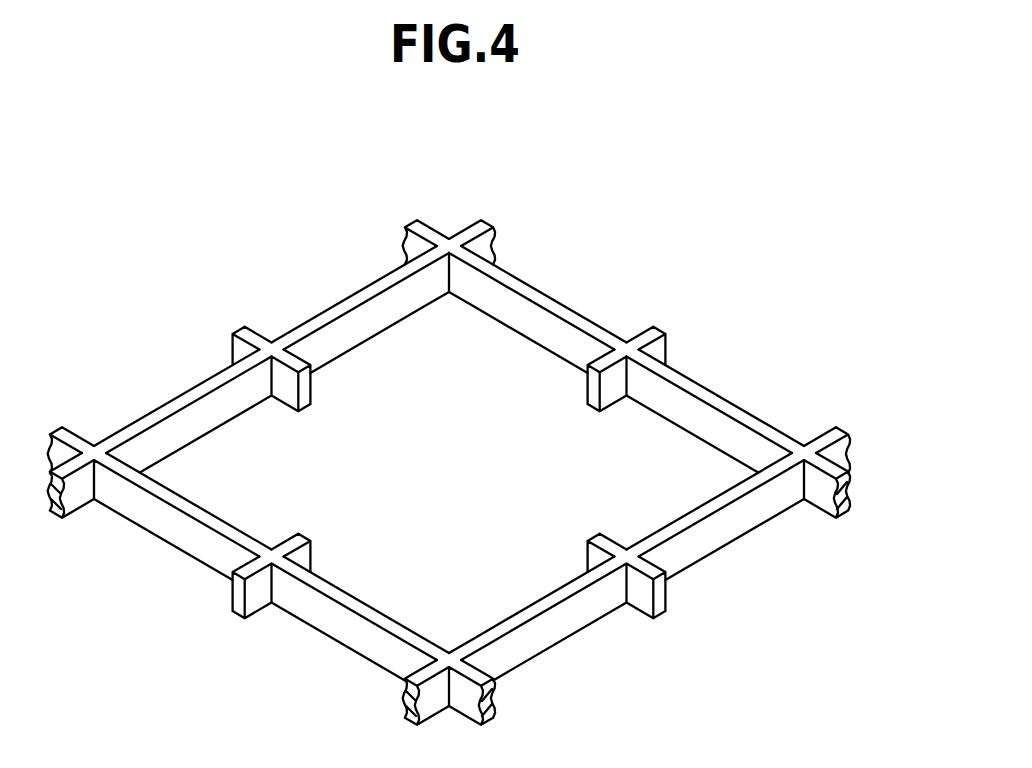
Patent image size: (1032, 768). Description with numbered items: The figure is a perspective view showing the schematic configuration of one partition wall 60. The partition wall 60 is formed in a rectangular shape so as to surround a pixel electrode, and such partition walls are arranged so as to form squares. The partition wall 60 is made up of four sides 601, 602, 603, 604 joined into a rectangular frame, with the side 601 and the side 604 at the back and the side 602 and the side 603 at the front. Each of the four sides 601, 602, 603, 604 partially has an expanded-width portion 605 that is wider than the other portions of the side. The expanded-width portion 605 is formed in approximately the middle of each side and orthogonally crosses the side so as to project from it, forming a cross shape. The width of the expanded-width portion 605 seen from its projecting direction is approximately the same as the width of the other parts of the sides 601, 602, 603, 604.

The partition wall 60 is at (344, 248).
The side 601 is at (529, 284).
The side 602 is at (693, 513).
The side 603 is at (332, 592).
The side 604 is at (172, 410).
The expanded-width portion 605 is at (648, 330).